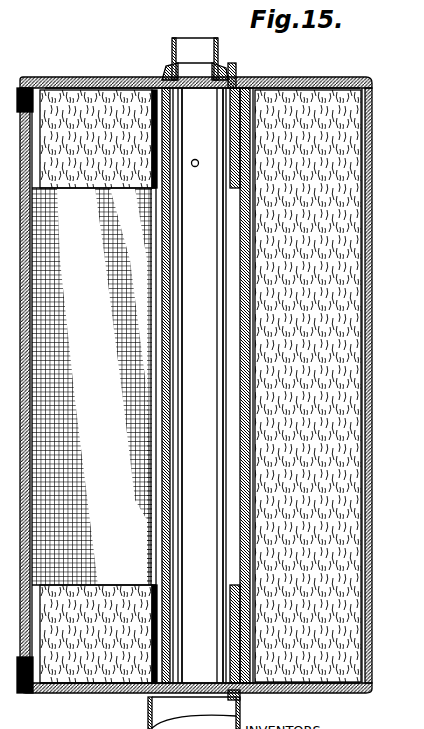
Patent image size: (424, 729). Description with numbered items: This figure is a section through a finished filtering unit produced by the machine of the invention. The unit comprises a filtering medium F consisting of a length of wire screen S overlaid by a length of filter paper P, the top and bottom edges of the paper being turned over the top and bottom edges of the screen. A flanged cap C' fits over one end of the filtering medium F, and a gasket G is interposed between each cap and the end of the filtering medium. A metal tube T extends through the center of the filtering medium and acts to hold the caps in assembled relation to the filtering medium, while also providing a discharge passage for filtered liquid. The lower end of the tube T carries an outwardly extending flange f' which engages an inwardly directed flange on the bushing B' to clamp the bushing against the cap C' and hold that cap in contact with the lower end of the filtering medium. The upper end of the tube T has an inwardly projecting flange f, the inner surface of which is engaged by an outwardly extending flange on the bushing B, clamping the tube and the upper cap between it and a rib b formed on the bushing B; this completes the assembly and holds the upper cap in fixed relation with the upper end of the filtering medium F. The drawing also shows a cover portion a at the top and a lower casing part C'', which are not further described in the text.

The bushing B is at (179, 55).
The rib b is at (168, 72).
The inwardly projecting flange f is at (239, 118).
The cover a is at (338, 82).
The flanged cap C' is at (201, 368).
The filter paper P is at (244, 305).
The wire screen S is at (250, 402).
The metal tube T is at (168, 512).
The filtering medium F is at (355, 362).
The bushing B' is at (165, 713).
The outwardly extending flange f' is at (249, 651).
The gasket G is at (324, 692).
The casing lower part C'' is at (204, 688).